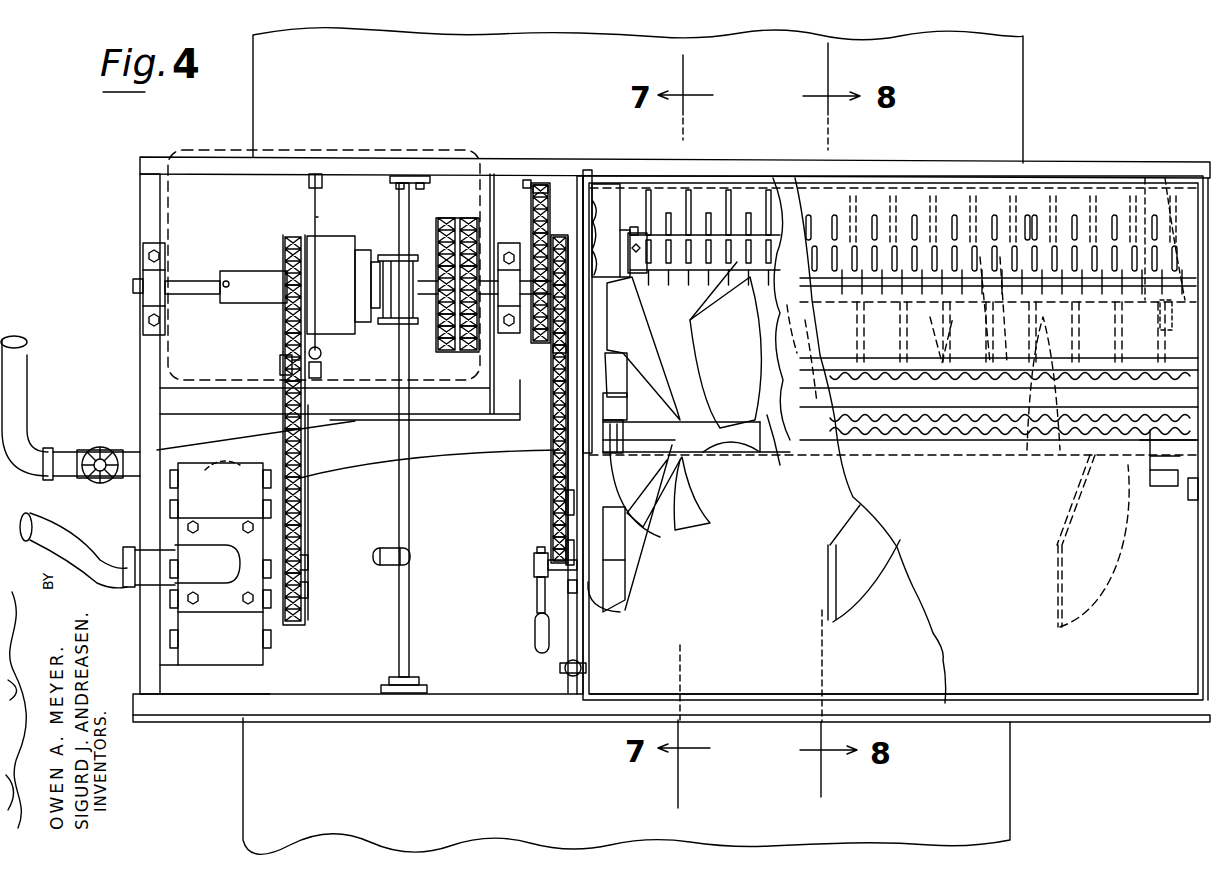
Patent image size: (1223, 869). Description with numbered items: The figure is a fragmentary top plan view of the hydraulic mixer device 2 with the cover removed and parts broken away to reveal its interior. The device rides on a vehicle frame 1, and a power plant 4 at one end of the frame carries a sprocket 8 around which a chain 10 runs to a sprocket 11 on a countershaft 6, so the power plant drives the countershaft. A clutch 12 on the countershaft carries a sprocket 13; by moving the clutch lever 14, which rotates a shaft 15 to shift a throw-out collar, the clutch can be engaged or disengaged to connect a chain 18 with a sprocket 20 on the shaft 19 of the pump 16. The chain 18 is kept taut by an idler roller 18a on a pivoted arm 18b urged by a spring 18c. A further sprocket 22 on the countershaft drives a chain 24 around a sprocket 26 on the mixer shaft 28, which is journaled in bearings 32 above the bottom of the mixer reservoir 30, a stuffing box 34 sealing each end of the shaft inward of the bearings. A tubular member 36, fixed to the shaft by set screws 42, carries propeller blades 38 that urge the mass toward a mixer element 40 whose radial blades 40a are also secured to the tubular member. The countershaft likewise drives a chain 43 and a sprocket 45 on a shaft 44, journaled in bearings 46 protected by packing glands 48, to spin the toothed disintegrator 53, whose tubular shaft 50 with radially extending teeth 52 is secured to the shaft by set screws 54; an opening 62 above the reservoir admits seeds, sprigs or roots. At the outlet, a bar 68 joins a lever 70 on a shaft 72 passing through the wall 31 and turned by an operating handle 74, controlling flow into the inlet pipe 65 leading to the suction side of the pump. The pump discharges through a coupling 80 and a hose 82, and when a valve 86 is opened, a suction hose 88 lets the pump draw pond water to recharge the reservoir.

The vehicle frame 1 is at (162, 142).
The hydraulic mixer device 2 is at (1068, 169).
The power plant 4 is at (153, 380).
The countershaft 6 is at (140, 285).
The sprocket 8 is at (440, 330).
The chain 10 is at (441, 225).
The sprocket 11 is at (456, 225).
The clutch 12 is at (352, 250).
The sprocket 13 is at (300, 235).
The clutch lever 14 is at (380, 552).
The shaft 15 is at (405, 607).
The pump 16 is at (242, 660).
The chain 18 is at (283, 432).
The idler roller 18a is at (288, 356).
The pivoted arm 18b is at (316, 218).
The spring 18c is at (322, 352).
The pump shaft 19 is at (300, 562).
The sprocket 20 is at (300, 590).
The sprocket 22 is at (553, 250).
The chain 24 is at (556, 348).
The sprocket 26 is at (553, 518).
The mixer shaft 28 is at (545, 440).
The mixer reservoir 30 is at (780, 705).
The wall 31 is at (588, 642).
The bearings 32 is at (550, 482).
The stuffing box 34 is at (612, 505).
The tubular member 36 is at (782, 455).
The propeller blades 38 is at (702, 322).
The mixer element 40 is at (636, 591).
The radial blades 40a is at (640, 565).
The set screws 42 is at (622, 405).
The chain 43 is at (536, 185).
The shaft 44 is at (628, 222).
The sprocket 45 is at (542, 185).
The bearings 46 is at (572, 245).
The packing glands 48 is at (620, 205).
The tubular shaft 50 is at (745, 190).
The teeth 52 is at (780, 192).
The toothed disintegrator 53 is at (740, 195).
The set screws 54 is at (700, 250).
The opening 62 is at (890, 262).
The inlet pipe 65 is at (432, 455).
The bar 68 is at (572, 525).
The lever 70 is at (624, 606).
The shaft 72 is at (534, 565).
The operating handle 74 is at (537, 632).
The coupling 80 is at (210, 578).
The hose 82 is at (80, 530).
The valve 86 is at (100, 447).
The suction hose 88 is at (30, 414).